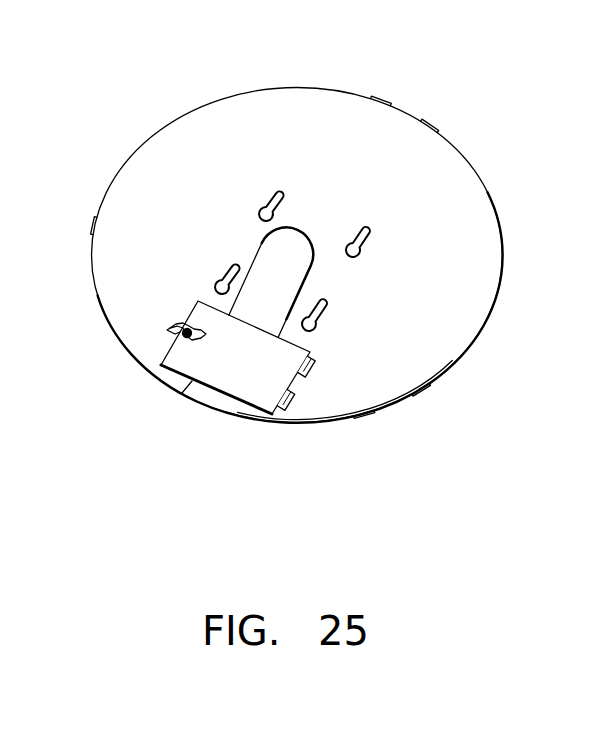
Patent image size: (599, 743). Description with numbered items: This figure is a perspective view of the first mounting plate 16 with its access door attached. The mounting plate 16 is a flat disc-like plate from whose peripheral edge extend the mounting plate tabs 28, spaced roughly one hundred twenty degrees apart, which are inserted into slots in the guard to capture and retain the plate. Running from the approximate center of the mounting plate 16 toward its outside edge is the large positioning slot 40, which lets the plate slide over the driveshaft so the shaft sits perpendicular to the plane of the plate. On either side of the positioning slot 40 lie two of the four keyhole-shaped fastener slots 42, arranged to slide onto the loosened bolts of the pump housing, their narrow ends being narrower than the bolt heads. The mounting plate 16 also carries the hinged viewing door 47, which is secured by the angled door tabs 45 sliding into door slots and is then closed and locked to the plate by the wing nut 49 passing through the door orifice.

The mounting plate 16 is at (110, 108).
The mounting plate tabs 28 is at (400, 408).
The positioning slot 40 is at (295, 272).
The fastener slots 42 is at (364, 230).
The angled door tabs 45 is at (311, 368).
The hinged viewing door 47 is at (219, 376).
The wing nut 49 is at (176, 332).